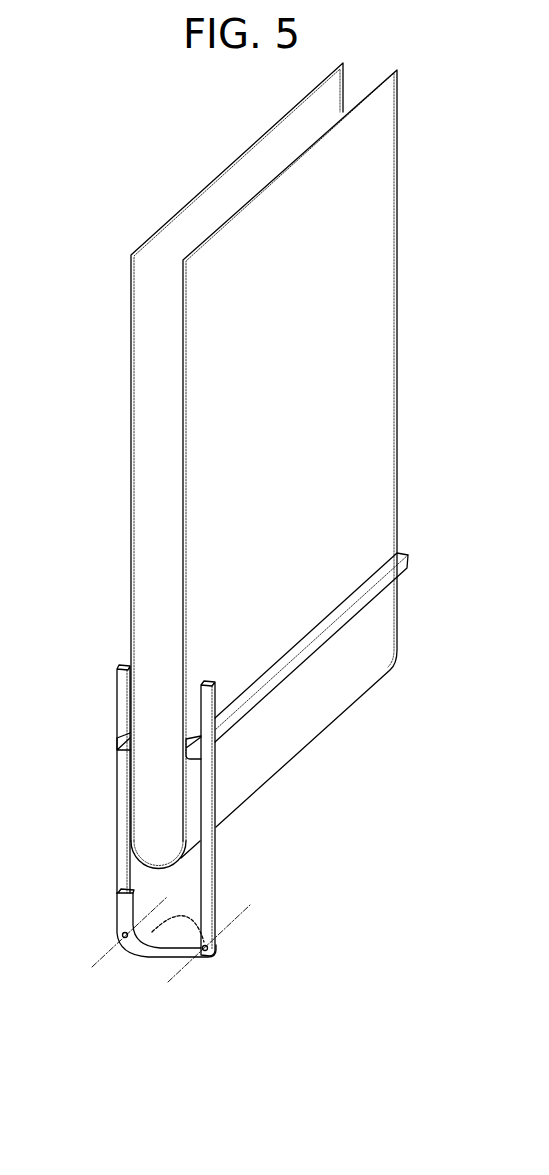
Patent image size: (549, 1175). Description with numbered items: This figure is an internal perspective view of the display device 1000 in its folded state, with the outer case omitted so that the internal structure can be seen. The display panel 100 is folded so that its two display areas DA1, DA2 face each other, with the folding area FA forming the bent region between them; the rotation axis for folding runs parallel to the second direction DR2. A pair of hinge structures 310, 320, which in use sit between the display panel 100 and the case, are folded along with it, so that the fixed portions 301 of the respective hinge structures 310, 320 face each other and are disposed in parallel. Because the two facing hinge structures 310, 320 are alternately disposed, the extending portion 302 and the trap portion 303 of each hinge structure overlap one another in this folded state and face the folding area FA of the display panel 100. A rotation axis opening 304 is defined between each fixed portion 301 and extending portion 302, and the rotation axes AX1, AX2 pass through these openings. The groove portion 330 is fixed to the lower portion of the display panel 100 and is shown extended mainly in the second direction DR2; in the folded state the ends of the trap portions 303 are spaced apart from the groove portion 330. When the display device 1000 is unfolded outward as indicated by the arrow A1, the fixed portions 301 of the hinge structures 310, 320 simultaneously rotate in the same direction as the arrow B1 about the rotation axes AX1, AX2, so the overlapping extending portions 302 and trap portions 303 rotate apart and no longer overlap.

The display device 1000 is at (257, 549).
The display panel 100 is at (272, 496).
The arrow A1 is at (190, 172).
The display area DA1 is at (146, 359).
The display area DA2 is at (363, 330).
The groove portion 330 is at (392, 581).
The hinge structure 310 is at (97, 847).
The fixed portion 301 is at (202, 808).
The hinge structure 320 is at (216, 858).
The extending portion 302 is at (183, 950).
The trap portion 303 is at (133, 943).
The rotation axis opening 304 is at (207, 953).
The rotation axis AX1 is at (107, 944).
The rotation axis AX2 is at (186, 954).
The folding area FA is at (160, 868).
The arrow B1 is at (230, 947).
The second direction DR2 is at (380, 870).